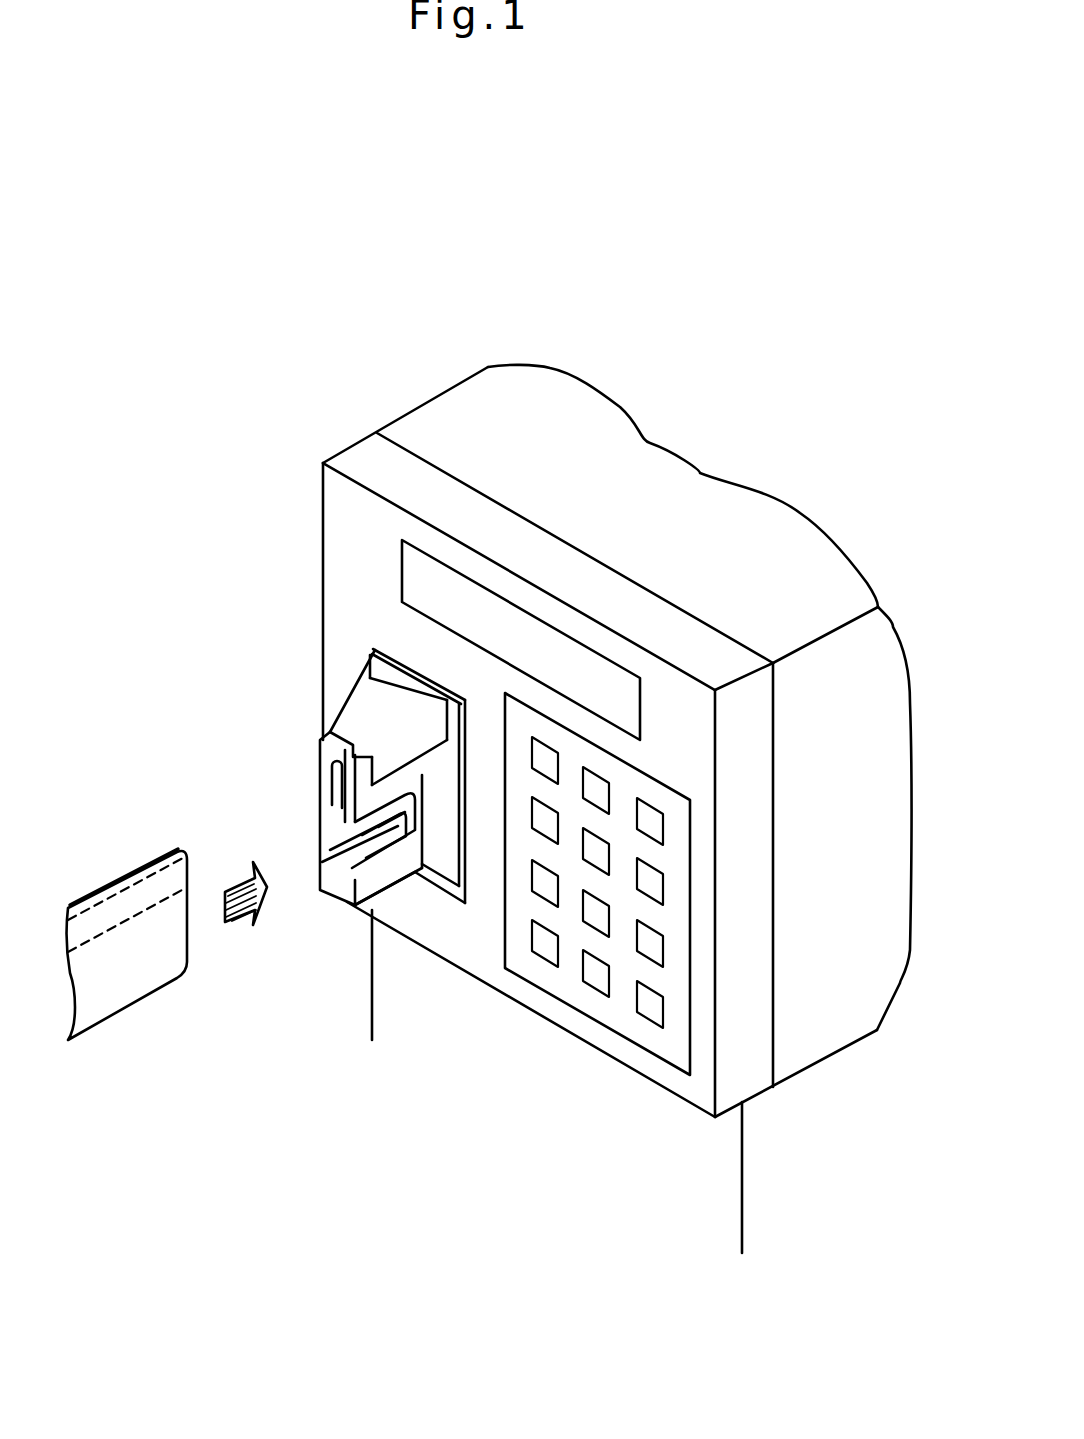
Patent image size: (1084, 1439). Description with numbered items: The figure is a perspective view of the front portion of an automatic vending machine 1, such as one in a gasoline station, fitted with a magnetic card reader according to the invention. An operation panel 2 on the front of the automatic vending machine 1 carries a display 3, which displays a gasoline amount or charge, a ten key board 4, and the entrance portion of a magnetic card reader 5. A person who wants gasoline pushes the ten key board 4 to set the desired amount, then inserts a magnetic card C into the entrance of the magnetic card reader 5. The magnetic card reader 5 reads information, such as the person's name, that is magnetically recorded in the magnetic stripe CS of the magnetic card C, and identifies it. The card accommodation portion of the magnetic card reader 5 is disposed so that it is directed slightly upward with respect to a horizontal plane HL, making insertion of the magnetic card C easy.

The automatic vending machine 1 is at (798, 1147).
The operation panel 2 is at (677, 1083).
The display 3 is at (620, 636).
The ten key board 4 is at (603, 1012).
The magnetic card reader 5 is at (433, 882).
The horizontal plane HL is at (320, 855).
The magnetic card C is at (122, 990).
The magnetic stripe CS is at (125, 908).